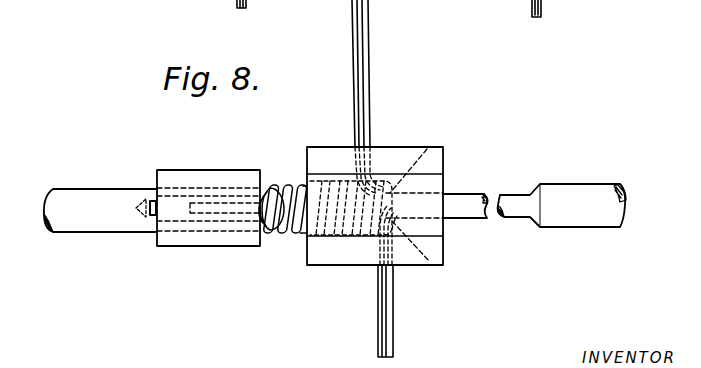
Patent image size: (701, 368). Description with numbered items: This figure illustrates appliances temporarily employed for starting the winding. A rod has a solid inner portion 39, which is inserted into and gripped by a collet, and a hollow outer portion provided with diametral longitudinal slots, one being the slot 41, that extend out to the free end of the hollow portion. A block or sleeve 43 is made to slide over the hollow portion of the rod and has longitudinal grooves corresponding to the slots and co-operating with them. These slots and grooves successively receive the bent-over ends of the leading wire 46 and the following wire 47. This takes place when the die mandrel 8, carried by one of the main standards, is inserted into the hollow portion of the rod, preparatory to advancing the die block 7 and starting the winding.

The die block 7 is at (435, 250).
The die mandrel 8 is at (510, 205).
The solid inner portion 39 is at (103, 205).
The diametral longitudinal slot 41 is at (152, 216).
The block or sleeve 43 is at (188, 170).
The leading wire 46 is at (265, 216).
The following wire 47 is at (355, 44).